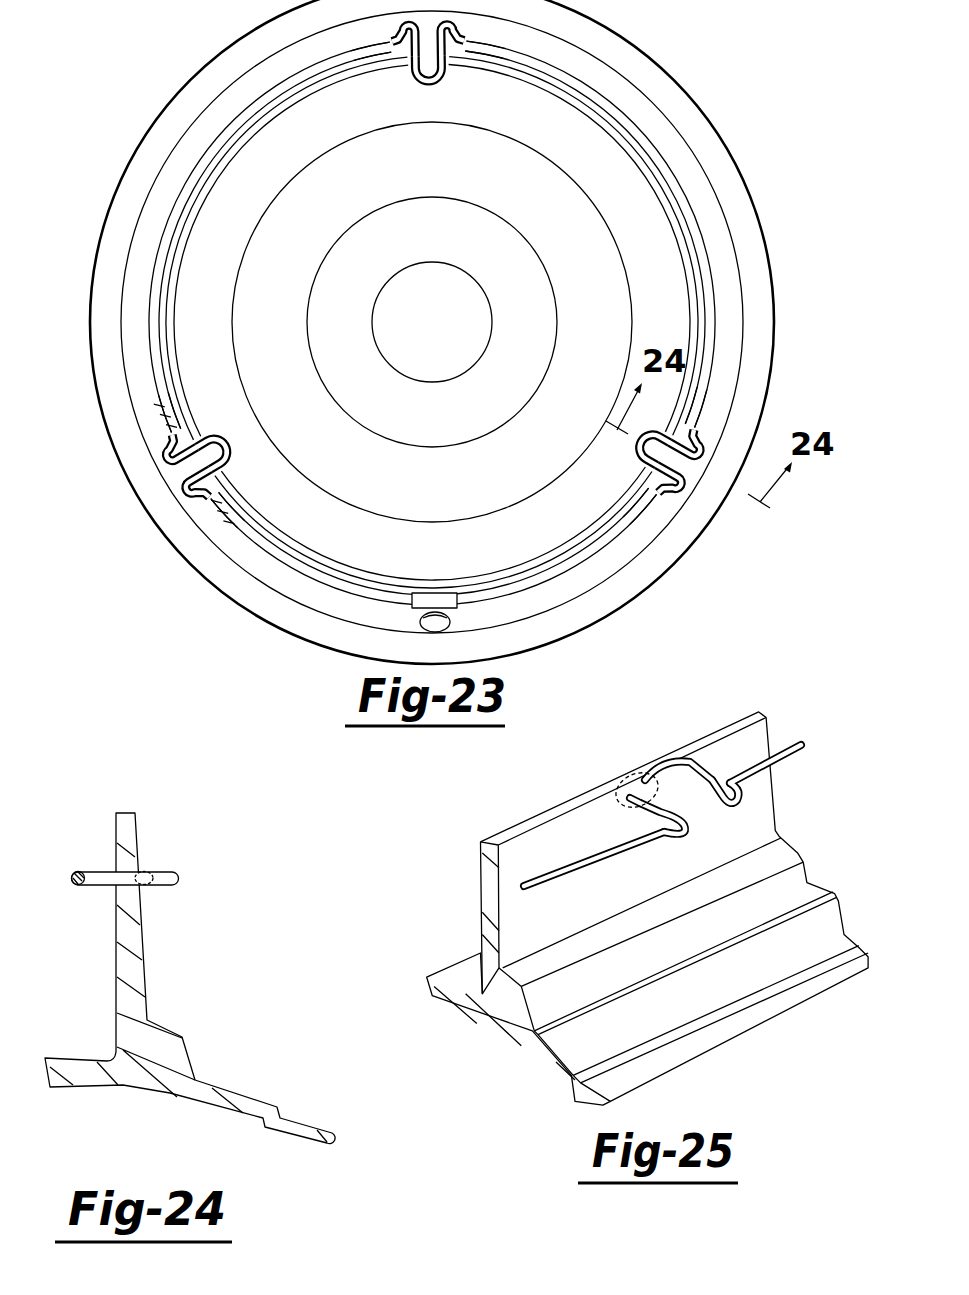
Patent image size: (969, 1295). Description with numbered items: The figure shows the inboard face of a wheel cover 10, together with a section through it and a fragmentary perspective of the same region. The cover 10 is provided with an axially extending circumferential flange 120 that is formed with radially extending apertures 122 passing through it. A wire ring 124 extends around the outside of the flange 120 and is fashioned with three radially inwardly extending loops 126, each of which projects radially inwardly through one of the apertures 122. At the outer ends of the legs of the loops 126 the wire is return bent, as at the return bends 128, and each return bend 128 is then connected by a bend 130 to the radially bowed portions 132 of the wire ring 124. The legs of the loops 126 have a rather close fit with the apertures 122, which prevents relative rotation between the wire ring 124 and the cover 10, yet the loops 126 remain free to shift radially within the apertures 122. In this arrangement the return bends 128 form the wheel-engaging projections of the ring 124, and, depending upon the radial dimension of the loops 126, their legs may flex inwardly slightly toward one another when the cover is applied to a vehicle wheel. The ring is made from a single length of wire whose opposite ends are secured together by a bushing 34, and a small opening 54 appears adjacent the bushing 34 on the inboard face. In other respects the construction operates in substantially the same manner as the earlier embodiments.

In FIG. 23, the cover 10 is at (694, 84).
In FIG. 24, the cover 10 is at (205, 975).
In FIG. 25, the cover 10 is at (800, 843).
In FIG. 23, the bushing 34 is at (446, 593).
In FIG. 23, the opening 54 is at (456, 620).
In FIG. 24, the circumferential flange 120 is at (127, 820).
In FIG. 25, the circumferential flange 120 is at (757, 710).
In FIG. 23, the apertures 122 is at (181, 501).
In FIG. 24, the apertures 122 is at (141, 868).
In FIG. 25, the apertures 122 is at (657, 782).
In FIG. 23, the wire ring 124 is at (666, 150).
In FIG. 23, the loops 126 is at (646, 440).
In FIG. 24, the loops 126 is at (92, 870).
In FIG. 25, the loops 126 is at (697, 790).
In FIG. 23, the return bends 128 is at (701, 456).
In FIG. 24, the return bends 128 is at (180, 878).
In FIG. 25, the return bends 128 is at (697, 831).
In FIG. 23, the bend 130 is at (693, 430).
In FIG. 25, the bend 130 is at (726, 788).
In FIG. 23, the radially bowed portions 132 is at (716, 320).